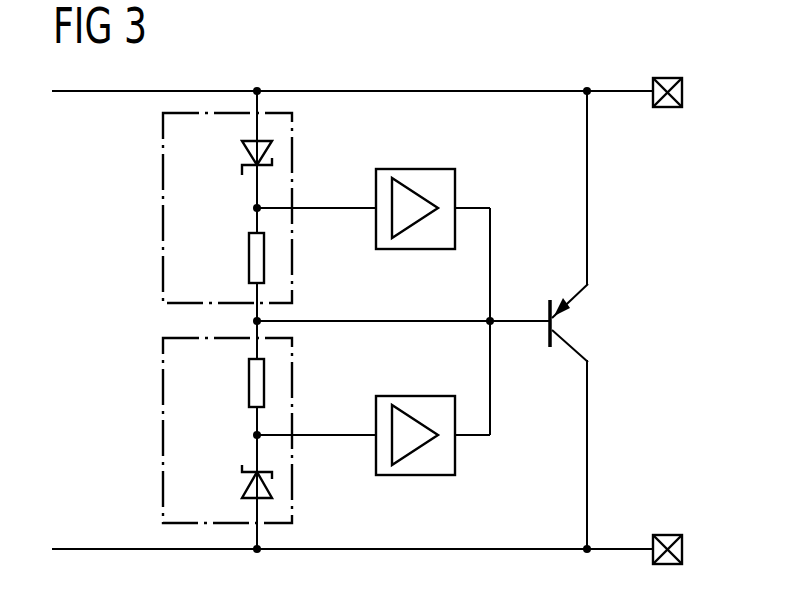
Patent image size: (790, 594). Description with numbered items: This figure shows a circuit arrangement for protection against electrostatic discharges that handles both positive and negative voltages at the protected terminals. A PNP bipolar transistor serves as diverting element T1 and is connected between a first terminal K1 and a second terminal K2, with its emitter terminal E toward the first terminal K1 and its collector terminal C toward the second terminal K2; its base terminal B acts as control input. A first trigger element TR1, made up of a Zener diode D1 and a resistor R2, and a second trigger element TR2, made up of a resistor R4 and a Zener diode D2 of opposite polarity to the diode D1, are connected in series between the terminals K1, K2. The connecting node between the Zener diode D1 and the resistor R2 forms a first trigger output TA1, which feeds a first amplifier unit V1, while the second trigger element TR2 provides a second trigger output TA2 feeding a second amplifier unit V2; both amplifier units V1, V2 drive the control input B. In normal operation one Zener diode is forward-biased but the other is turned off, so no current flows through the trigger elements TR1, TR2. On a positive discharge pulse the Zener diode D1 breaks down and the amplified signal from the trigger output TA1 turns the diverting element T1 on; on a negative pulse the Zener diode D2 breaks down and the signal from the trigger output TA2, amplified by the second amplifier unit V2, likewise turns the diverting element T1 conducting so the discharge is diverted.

The second trigger element TR2 is at (163, 192).
The first trigger element TR1 is at (163, 422).
The Zener diode D2 is at (246, 160).
The Zener diode D1 is at (246, 488).
The resistor R4 is at (249, 262).
The resistor R2 is at (249, 386).
The second trigger output TA2 is at (296, 207).
The first trigger output TA1 is at (296, 434).
The second amplifier unit V2 is at (416, 168).
The first amplifier unit V1 is at (415, 476).
The diverting element T1 is at (560, 322).
The control input or base terminal B is at (525, 308).
The emitter terminal E is at (570, 284).
The collector terminal C is at (570, 362).
The first terminal K1 is at (667, 108).
The second terminal K2 is at (667, 534).